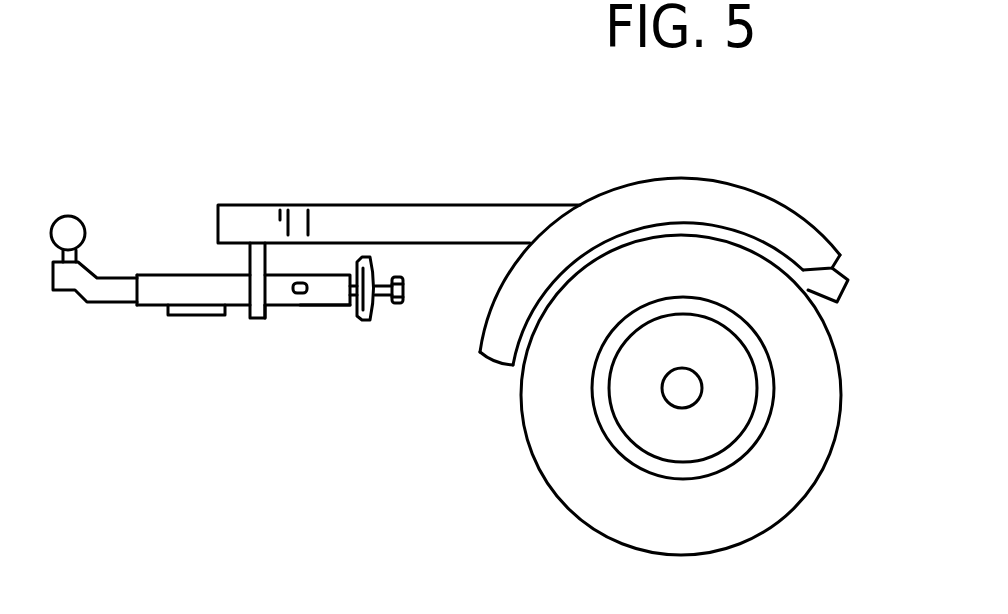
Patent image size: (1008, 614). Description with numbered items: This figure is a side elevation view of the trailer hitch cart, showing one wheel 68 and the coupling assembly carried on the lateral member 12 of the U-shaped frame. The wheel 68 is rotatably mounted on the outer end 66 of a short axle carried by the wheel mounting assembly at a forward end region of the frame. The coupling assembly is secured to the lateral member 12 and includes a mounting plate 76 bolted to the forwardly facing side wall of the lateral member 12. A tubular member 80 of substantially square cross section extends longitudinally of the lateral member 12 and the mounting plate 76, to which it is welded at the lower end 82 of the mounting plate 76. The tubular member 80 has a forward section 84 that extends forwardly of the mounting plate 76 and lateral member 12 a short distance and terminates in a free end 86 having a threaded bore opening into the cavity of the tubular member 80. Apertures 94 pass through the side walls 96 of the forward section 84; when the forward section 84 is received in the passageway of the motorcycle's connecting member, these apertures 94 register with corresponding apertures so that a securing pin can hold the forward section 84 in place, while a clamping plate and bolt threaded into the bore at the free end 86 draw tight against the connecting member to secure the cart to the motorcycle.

The lateral member 12 is at (228, 203).
The outer end of short axle 66 is at (690, 392).
The wheel 68 is at (555, 490).
The mounting plate 76 is at (257, 318).
The tubular member 80 is at (148, 297).
The lower end of mounting plate 82 is at (268, 308).
The forward section 84 is at (330, 292).
The free end 86 is at (343, 278).
The apertures 94 is at (300, 283).
The side walls 96 is at (313, 295).